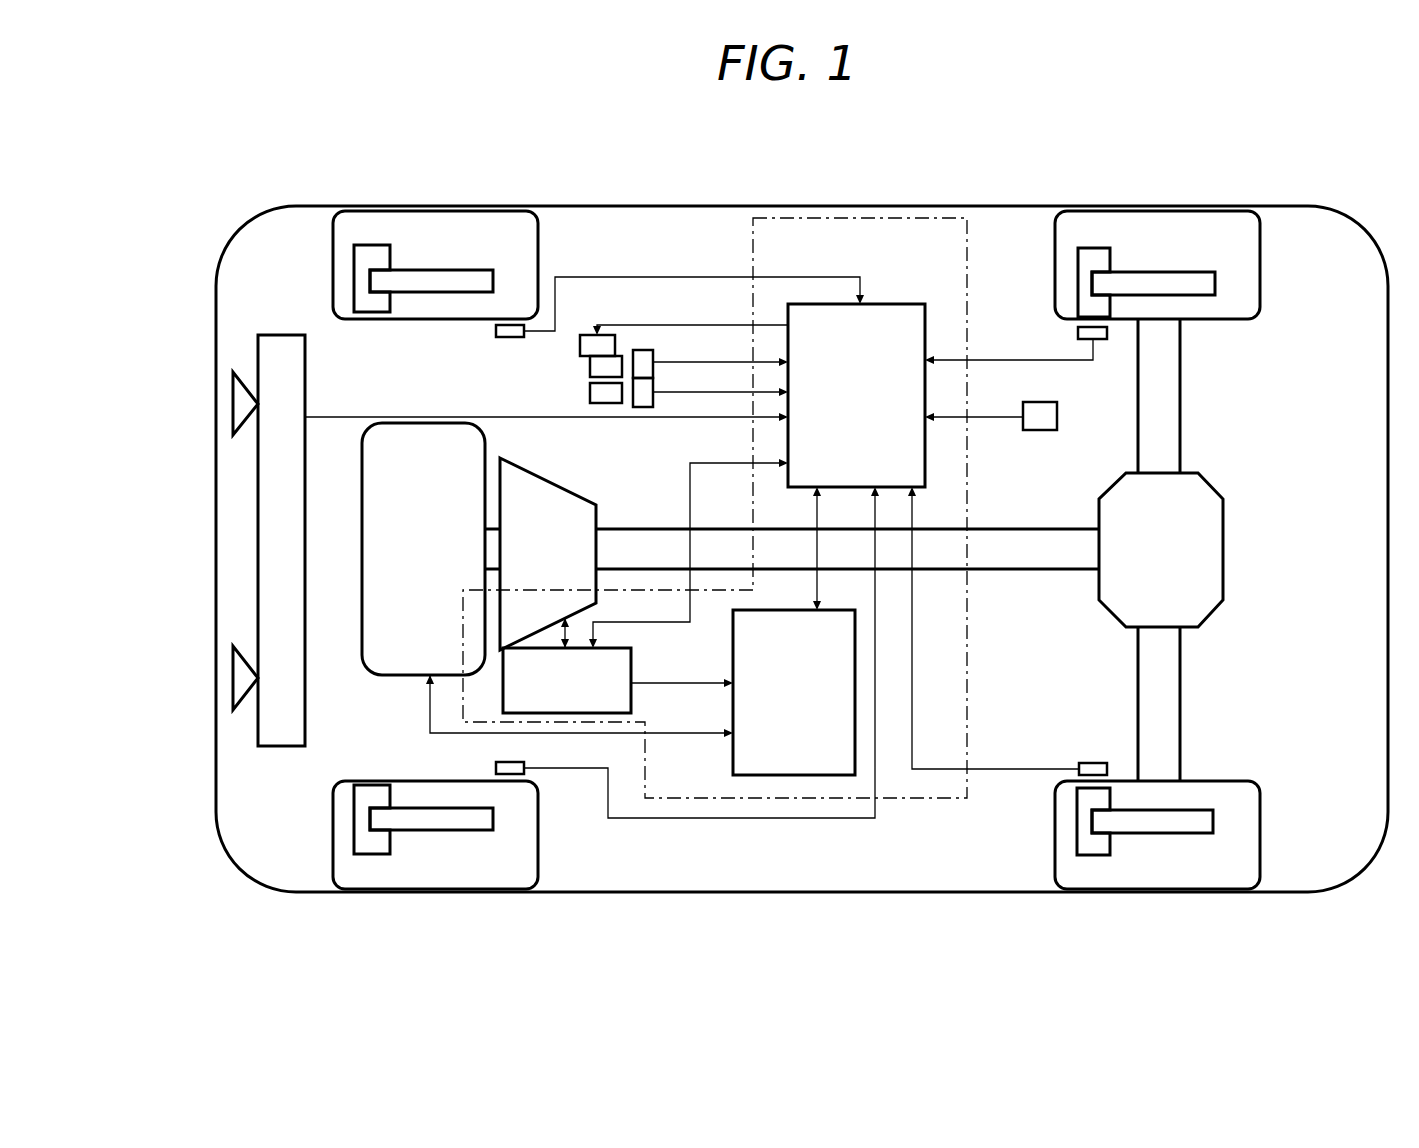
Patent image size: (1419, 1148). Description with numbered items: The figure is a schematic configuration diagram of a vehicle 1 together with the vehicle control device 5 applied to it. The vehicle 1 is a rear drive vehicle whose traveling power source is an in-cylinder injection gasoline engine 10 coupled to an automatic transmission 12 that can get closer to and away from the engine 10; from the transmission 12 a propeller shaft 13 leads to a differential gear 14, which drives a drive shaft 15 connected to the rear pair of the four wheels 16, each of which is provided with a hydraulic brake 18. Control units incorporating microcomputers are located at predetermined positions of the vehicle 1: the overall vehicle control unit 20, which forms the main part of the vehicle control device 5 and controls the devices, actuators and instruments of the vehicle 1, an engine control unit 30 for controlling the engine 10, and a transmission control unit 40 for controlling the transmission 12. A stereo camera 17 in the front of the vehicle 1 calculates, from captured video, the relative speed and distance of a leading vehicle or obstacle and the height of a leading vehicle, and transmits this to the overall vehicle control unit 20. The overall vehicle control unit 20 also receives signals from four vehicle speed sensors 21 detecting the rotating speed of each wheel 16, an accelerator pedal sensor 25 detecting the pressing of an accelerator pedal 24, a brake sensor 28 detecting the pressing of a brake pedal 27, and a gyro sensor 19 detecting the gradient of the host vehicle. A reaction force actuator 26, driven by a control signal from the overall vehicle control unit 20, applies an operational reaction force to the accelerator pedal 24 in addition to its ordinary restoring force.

The vehicle 1 is at (556, 180).
The vehicle control device 5 is at (810, 218).
The in-cylinder injection gasoline engine 10 is at (385, 660).
The automatic transmission 12 is at (555, 497).
The propeller shaft 13 is at (993, 557).
The differential gear 14 is at (1212, 565).
The drive shaft 15 is at (1170, 390).
The wheel 16 is at (425, 236).
The stereo camera 17 is at (256, 354).
The hydraulic brake 18 is at (354, 276).
The gyro sensor 19 is at (1043, 430).
The overall vehicle control unit 20 is at (905, 304).
The vehicle speed sensor 21 is at (503, 337).
The accelerator pedal 24 is at (590, 365).
The accelerator pedal sensor 25 is at (648, 358).
The reaction force actuator 26 is at (593, 331).
The brake pedal 27 is at (590, 393).
The brake sensor 28 is at (653, 392).
The engine control unit 30 is at (727, 757).
The transmission control unit 40 is at (632, 662).